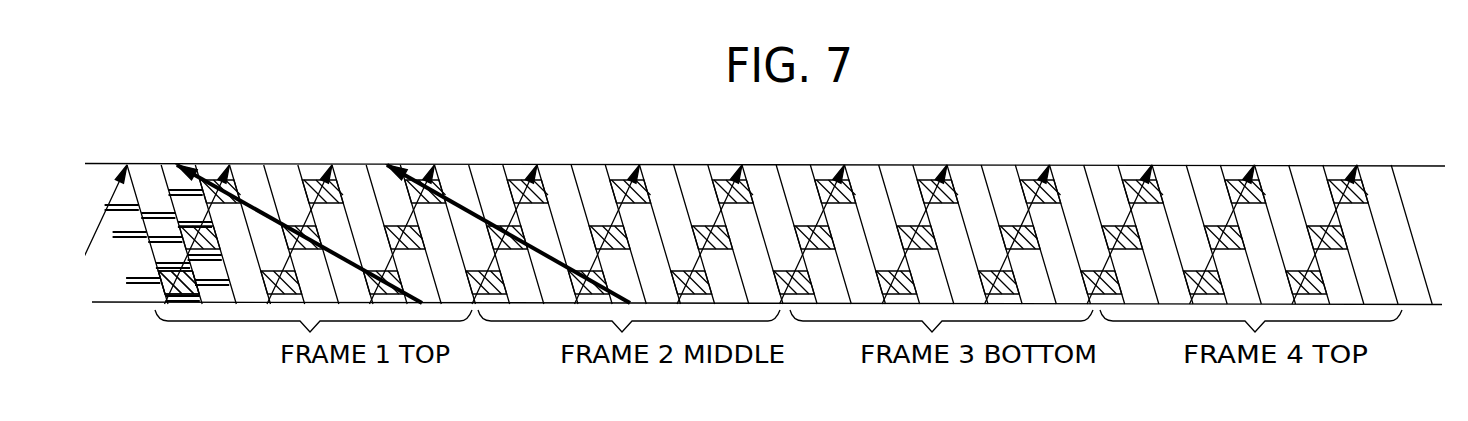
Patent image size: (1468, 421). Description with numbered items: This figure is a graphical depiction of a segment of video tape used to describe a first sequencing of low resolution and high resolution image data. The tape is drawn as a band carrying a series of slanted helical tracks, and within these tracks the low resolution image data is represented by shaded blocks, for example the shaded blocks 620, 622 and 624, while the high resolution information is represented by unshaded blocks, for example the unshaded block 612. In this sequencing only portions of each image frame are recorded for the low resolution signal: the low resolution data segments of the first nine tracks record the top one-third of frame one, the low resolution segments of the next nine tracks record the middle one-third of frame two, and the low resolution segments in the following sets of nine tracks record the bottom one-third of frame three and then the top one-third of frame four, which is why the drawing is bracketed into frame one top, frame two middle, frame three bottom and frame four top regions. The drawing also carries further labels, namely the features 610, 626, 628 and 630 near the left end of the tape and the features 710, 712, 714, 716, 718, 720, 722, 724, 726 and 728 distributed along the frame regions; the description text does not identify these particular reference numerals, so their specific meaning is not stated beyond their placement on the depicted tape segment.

The head scan start arrow 610 is at (118, 163).
The unshaded block 612 is at (216, 165).
The shaded block 620 is at (147, 306).
The shaded block 622 is at (211, 304).
The shaded block 624 is at (227, 200).
The bottom sync block 626 is at (257, 304).
The second tape motion arrow 628 is at (392, 172).
The first tape motion arrow 630 is at (308, 234).
The helical track 710 is at (262, 200).
The frame 1 bottom block 712 is at (495, 305).
The frame 2 track 714 is at (530, 304).
The frame 2 head scan arrow 716 is at (546, 165).
The frame 2 bottom block 718 is at (806, 305).
The frame 3 track 720 is at (837, 304).
The frame 3 head scan arrow 722 is at (852, 170).
The frame 3 bottom block 724 is at (1098, 305).
The frame 4 track 726 is at (1147, 304).
The frame 4 head scan arrow 728 is at (1160, 168).